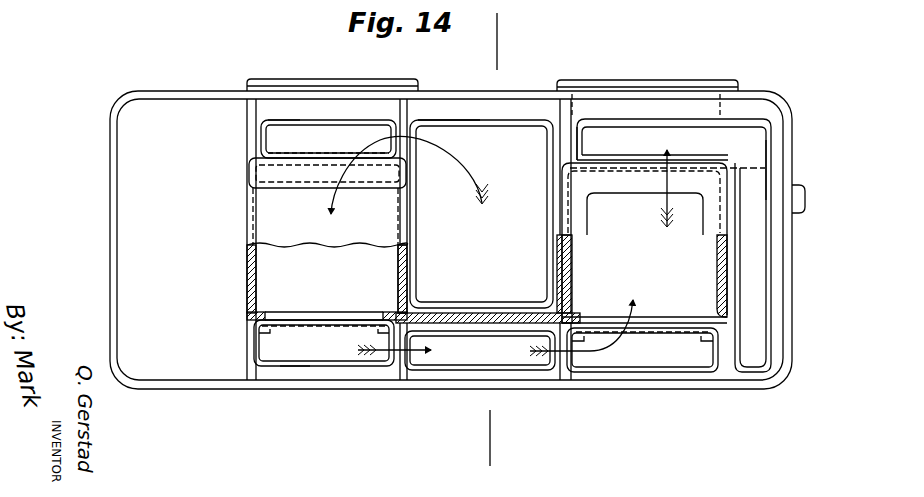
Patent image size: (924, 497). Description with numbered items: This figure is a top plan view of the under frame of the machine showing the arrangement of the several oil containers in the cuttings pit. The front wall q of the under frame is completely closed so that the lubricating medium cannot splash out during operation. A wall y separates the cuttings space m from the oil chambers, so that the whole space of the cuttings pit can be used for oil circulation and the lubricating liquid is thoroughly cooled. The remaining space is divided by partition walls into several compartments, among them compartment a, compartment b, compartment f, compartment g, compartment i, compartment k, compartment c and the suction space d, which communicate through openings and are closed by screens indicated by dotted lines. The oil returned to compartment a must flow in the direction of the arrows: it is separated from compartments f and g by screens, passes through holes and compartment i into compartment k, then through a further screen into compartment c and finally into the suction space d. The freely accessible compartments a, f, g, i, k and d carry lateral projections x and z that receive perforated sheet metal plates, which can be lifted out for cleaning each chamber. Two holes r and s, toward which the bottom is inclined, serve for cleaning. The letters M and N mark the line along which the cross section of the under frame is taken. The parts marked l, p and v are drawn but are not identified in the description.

The cuttings space m is at (450, 239).
The hole r is at (326, 85).
The hole s is at (636, 86).
The section line end N is at (483, 41).
The section line end M is at (477, 438).
The wall y is at (252, 132).
The compartment f is at (328, 139).
The insert tray l is at (300, 176).
The compartment b is at (327, 254).
The compartment g is at (324, 343).
The compartment a is at (481, 214).
The lateral projection z is at (480, 121).
The front wall q is at (465, 317).
The compartment i is at (480, 350).
The suction space d is at (670, 245).
The partition wall p is at (568, 145).
The lateral projection x is at (288, 92).
The compartment c is at (644, 243).
The insert v is at (580, 217).
The compartment k is at (642, 350).